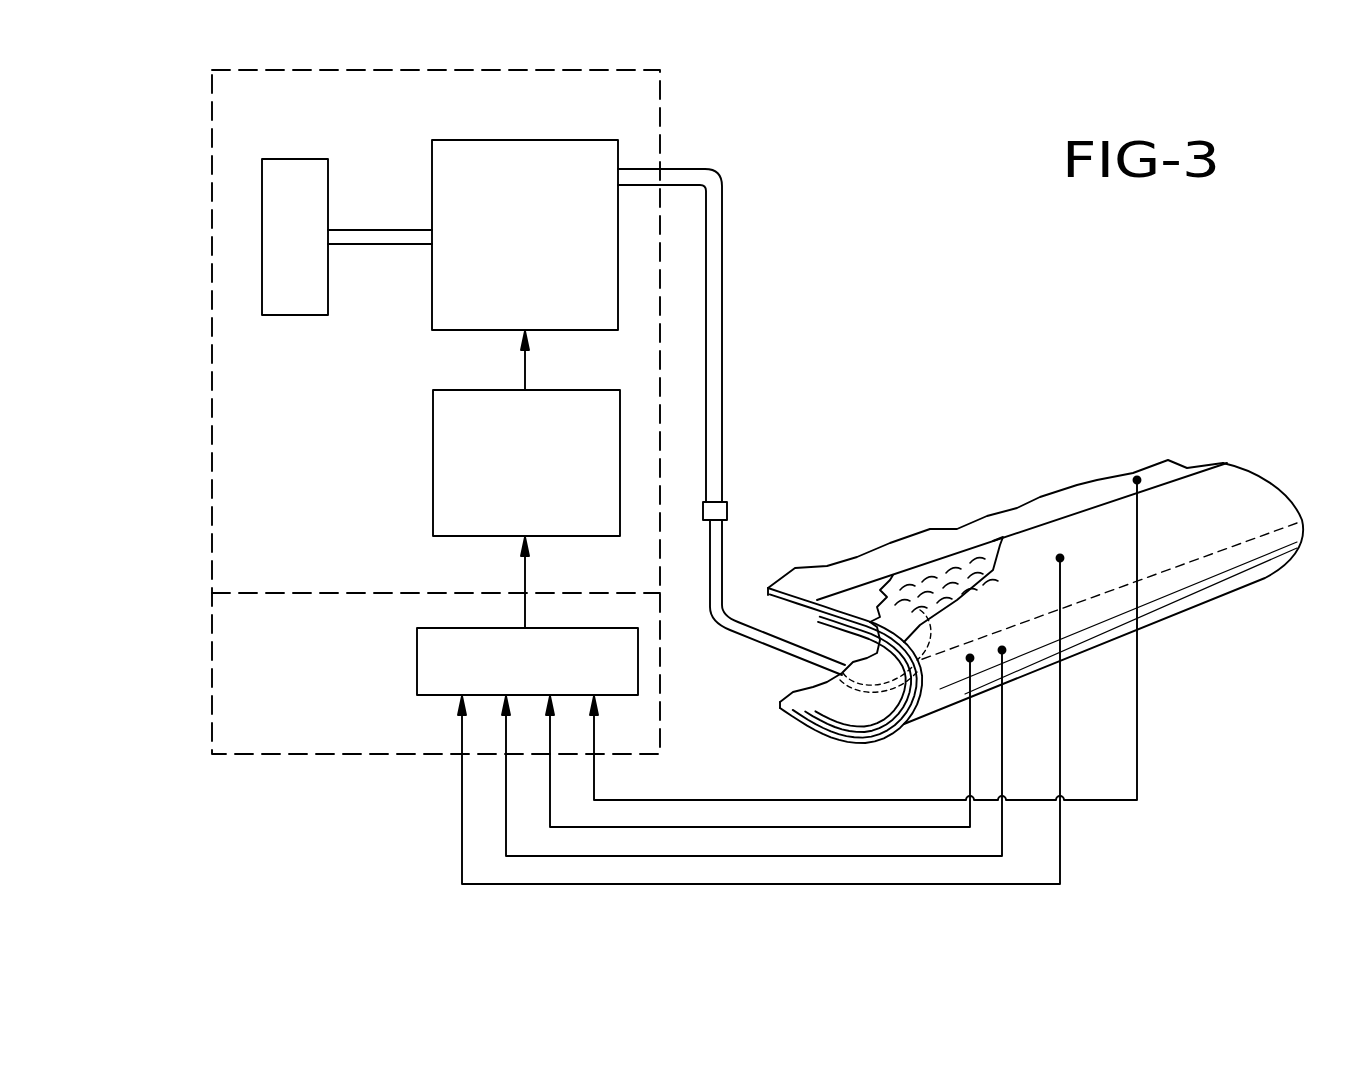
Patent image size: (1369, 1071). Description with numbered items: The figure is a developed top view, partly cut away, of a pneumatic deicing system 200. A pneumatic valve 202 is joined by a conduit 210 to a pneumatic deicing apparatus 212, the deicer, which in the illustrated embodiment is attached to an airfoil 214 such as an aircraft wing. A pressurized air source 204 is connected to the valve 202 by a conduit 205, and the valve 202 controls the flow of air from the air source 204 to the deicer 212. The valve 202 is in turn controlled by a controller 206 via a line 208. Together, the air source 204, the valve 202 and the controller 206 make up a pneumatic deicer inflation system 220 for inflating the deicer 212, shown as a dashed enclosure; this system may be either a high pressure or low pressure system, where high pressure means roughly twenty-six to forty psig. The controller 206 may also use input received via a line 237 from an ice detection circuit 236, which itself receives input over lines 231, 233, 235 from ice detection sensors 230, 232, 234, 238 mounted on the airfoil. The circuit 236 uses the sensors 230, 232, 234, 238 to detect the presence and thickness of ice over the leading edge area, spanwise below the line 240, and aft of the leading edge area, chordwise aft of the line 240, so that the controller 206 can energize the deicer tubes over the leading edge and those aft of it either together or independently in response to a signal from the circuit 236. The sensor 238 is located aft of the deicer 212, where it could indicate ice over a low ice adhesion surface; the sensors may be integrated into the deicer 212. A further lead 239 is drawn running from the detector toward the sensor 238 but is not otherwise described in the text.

The pneumatic deicing system 200 is at (980, 390).
The pneumatic valve 202 is at (474, 140).
The pressurized air source 204 is at (296, 318).
The conduit 205 is at (380, 235).
The controller 206 is at (433, 490).
The line 208 is at (525, 360).
The conduit 210 is at (720, 565).
The pneumatic deicing apparatus 212 is at (1213, 614).
The airfoil 214 is at (862, 578).
The pneumatic deicer inflation system 220 is at (660, 128).
The ice detection sensor 230 is at (1060, 558).
The line 231 is at (1060, 868).
The ice detection sensor 232 is at (1002, 650).
The line 233 is at (788, 855).
The ice detection sensor 234 is at (968, 662).
The line 235 is at (703, 827).
The ice detection circuit 236 is at (417, 662).
The line 237 is at (525, 570).
The ice detection sensor 238 is at (1137, 480).
The sensor lead 239 is at (1138, 692).
The line 240 is at (1262, 530).